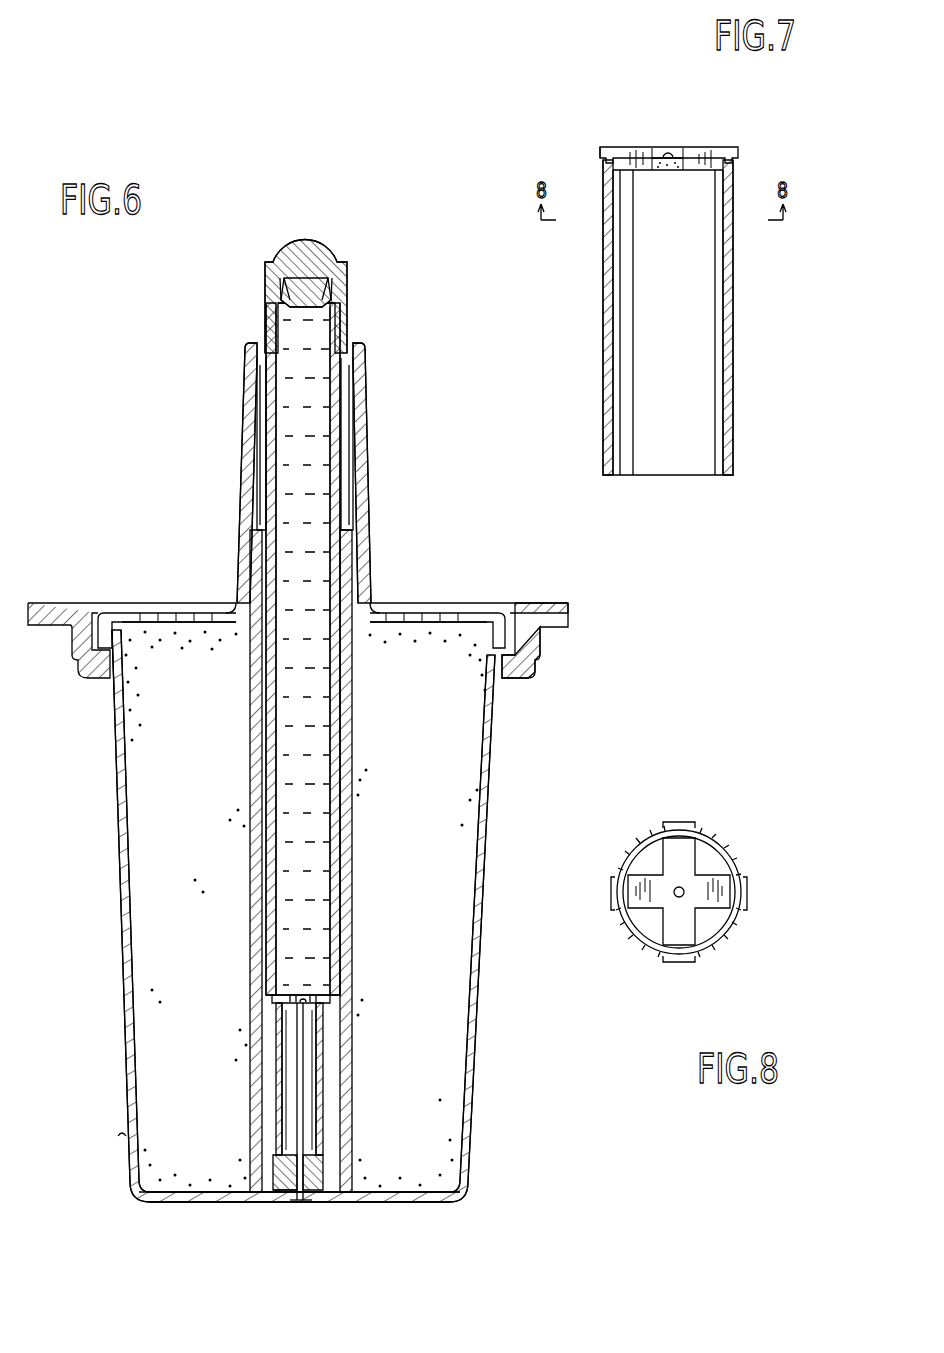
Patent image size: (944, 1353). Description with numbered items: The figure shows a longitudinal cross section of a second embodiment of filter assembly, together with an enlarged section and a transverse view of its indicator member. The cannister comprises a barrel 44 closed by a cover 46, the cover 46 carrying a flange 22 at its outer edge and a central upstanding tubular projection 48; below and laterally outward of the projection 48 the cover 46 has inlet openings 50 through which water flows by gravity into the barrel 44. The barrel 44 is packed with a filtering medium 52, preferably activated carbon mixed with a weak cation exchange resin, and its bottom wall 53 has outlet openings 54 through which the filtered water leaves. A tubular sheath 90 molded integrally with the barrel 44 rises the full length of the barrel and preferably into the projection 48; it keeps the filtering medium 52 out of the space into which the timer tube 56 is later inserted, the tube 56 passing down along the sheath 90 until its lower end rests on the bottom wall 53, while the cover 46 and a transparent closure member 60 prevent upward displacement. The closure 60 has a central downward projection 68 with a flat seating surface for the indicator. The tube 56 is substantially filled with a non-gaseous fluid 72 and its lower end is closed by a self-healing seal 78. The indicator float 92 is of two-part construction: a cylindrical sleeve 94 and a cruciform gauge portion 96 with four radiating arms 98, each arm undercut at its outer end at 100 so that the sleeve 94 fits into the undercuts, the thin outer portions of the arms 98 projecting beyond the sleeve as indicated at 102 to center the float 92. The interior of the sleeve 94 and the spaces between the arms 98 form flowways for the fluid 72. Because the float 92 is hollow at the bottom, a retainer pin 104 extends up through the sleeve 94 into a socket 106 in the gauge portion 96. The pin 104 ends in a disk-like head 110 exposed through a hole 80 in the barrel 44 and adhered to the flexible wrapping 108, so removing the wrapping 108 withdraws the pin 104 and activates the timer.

In FIG. 6, the flange 22 is at (560, 613).
In FIG. 6, the barrel portion 44 is at (490, 790).
In FIG. 6, the cover 46 is at (210, 613).
In FIG. 6, the tubular projection 48 is at (365, 402).
In FIG. 6, the inlet openings 50 is at (138, 613).
In FIG. 6, the filtering medium 52 is at (118, 655).
In FIG. 6, the bottom wall 53 is at (180, 1198).
In FIG. 6, the outlet openings 54 is at (428, 1200).
In FIG. 6, the cylindrical tube 56 is at (345, 478).
In FIG. 6, the transparent closure member 60 is at (323, 228).
In FIG. 6, the central downward projection 68 is at (283, 297).
In FIG. 6, the non-gaseous fluid 72 is at (310, 740).
In FIG. 6, the self-healing seal 78 is at (318, 1172).
In FIG. 6, the hole 80 is at (285, 1200).
In FIG. 6, the tubular sheath 90 is at (345, 810).
In FIG. 6, the float 92 is at (275, 1085).
In FIG. 7, the float 92 is at (592, 330).
In FIG. 8, the float 92 is at (769, 834).
In FIG. 6, the cylindrical sleeve 94 is at (318, 1057).
In FIG. 7, the cylindrical sleeve 94 is at (733, 350).
In FIG. 8, the cylindrical sleeve 94 is at (645, 848).
In FIG. 6, the gauge portion 96 is at (332, 990).
In FIG. 7, the gauge portion 96 is at (682, 150).
In FIG. 7, the radiating arms 98 is at (638, 150).
In FIG. 8, the radiating arms 98 is at (713, 877).
In FIG. 7, the undercut 100 is at (735, 163).
In FIG. 7, the radial extension 102 is at (600, 148).
In FIG. 8, the radial extension 102 is at (683, 962).
In FIG. 6, the retainer pin 104 is at (303, 1103).
In FIG. 8, the socket 106 is at (685, 895).
In FIG. 6, the wrapping 108 is at (127, 1165).
In FIG. 6, the disk-like head 110 is at (310, 1203).